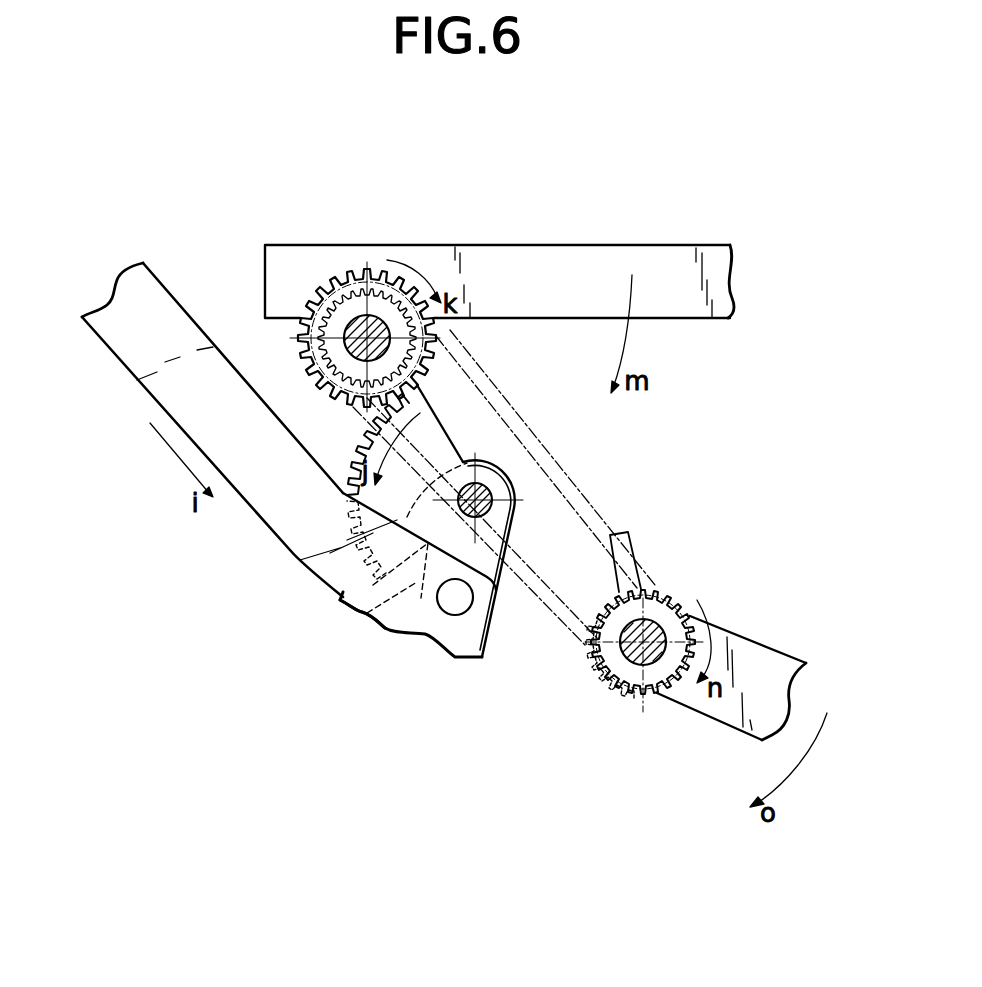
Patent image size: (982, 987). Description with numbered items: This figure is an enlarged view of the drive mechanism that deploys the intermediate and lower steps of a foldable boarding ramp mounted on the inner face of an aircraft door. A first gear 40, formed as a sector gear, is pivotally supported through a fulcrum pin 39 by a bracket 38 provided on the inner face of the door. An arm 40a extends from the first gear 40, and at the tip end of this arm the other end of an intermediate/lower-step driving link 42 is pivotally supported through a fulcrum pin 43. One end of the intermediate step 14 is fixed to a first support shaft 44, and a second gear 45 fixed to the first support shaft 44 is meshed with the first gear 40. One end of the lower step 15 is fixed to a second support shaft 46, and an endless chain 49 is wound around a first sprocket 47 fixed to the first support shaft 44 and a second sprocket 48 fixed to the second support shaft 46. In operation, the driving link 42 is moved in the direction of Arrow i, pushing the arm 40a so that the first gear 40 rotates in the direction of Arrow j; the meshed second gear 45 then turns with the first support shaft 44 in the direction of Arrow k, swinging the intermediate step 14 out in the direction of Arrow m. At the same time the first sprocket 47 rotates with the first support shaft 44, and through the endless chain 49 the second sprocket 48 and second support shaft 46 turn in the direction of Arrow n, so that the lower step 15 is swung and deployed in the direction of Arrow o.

The intermediate step 14 is at (578, 258).
The lower step 15 is at (760, 660).
The bracket 38 is at (485, 647).
The fulcrum pin 39 is at (487, 492).
The first gear 40 is at (445, 522).
The arm 40a is at (367, 617).
The intermediate/lower-step driving link 42 is at (263, 495).
The fulcrum pin 43 is at (453, 603).
The first support shaft 44 is at (338, 360).
The second gear 45 is at (338, 275).
The second support shaft 46 is at (607, 677).
The first sprocket 47 is at (305, 357).
The second sprocket 48 is at (660, 583).
The endless chain 49 is at (587, 492).